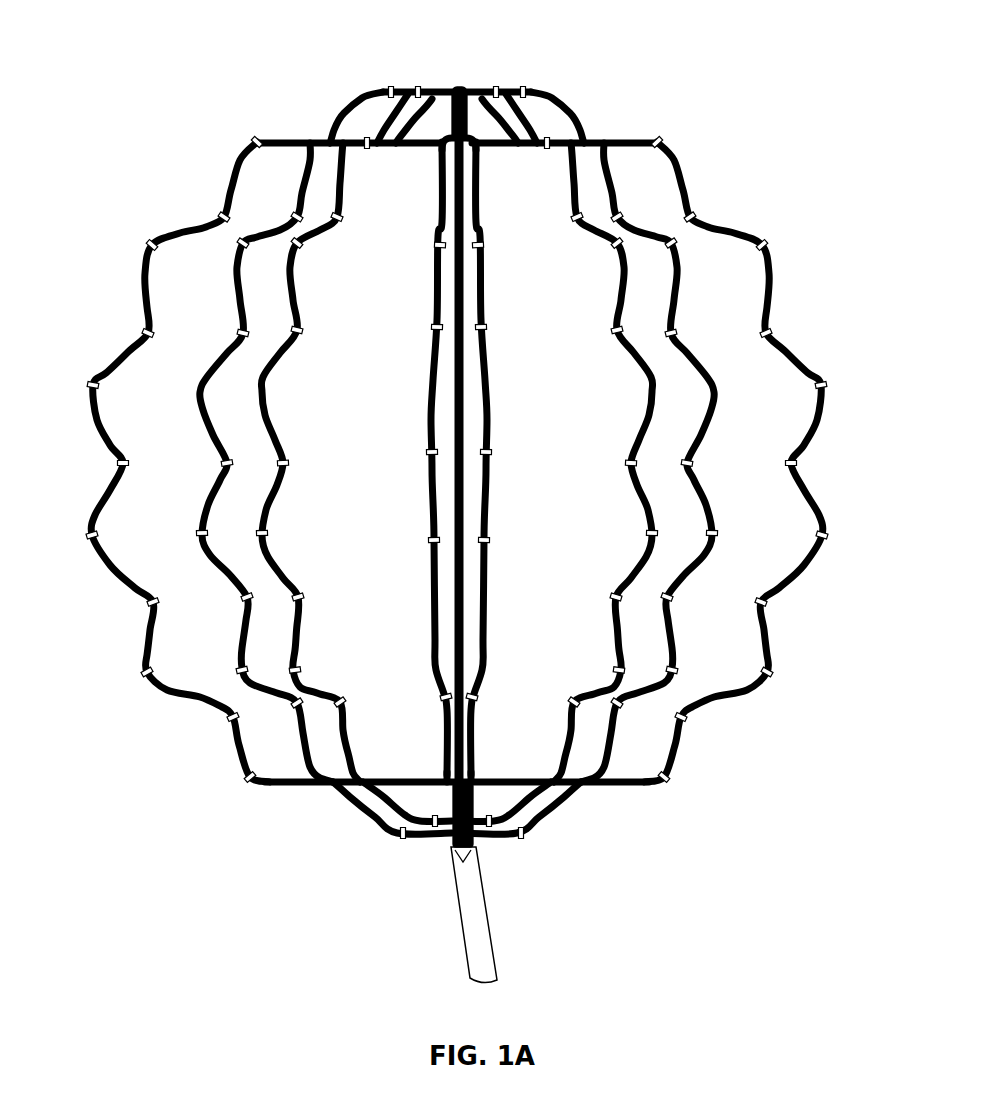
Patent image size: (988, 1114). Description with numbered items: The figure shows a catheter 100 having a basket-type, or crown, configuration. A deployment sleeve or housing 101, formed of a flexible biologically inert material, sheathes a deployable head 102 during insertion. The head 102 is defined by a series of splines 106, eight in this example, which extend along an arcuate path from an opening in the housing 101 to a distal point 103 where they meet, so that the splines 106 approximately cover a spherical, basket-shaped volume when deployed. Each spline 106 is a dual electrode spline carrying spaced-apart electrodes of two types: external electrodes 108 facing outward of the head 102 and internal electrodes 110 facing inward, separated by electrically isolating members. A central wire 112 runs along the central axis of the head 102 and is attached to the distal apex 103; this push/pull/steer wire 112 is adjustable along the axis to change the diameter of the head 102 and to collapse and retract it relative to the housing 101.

The catheter 100 is at (794, 53).
The deployment sleeve or housing 101 is at (488, 930).
The deployable head 102 is at (858, 282).
The distal point 103 is at (462, 88).
The splines 106 is at (632, 455).
The external electrodes 108 is at (391, 88).
The internal electrodes 110 is at (583, 140).
The central wire 112 is at (464, 288).